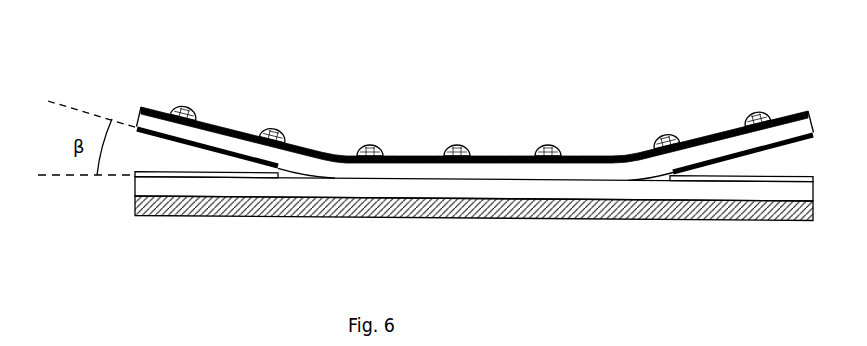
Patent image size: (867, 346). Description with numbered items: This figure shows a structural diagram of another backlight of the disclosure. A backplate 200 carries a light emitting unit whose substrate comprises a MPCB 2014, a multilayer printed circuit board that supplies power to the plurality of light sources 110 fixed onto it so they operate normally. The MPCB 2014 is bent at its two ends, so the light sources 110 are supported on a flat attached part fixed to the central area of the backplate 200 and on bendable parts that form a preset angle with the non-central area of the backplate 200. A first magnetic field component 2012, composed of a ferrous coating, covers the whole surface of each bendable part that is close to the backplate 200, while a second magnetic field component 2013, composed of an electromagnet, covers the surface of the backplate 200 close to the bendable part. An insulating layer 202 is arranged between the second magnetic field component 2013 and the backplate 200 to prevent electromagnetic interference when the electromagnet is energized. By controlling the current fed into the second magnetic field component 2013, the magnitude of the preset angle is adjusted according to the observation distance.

The light sources 110 is at (177, 108).
The backplate 200 is at (155, 205).
The insulating layer 202 is at (293, 188).
The first magnetic field component 2012 is at (727, 147).
The second magnetic field component 2013 is at (737, 180).
The MPCB 2014 is at (402, 157).